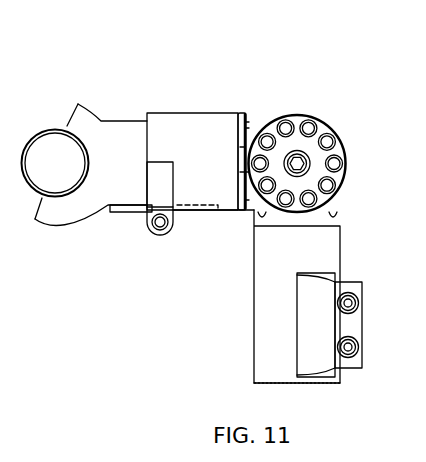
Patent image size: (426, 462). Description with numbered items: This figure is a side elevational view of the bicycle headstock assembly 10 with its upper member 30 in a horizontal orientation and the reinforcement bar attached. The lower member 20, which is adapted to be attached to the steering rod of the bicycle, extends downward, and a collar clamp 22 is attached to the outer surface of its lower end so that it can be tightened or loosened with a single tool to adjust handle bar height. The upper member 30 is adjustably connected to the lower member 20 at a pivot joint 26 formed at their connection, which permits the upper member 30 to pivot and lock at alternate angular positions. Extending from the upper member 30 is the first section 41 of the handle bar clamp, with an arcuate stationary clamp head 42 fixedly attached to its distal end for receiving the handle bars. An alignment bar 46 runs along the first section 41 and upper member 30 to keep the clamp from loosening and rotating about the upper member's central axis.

The bicycle headstock assembly 10 is at (165, 91).
The lower member 20 is at (347, 266).
The collar clamp 22 is at (323, 305).
The pivot joint 26 is at (341, 133).
The upper member 30 is at (211, 110).
The first section 41 is at (100, 135).
The stationary clamp head 42 is at (65, 205).
The alignment bar 46 is at (128, 213).